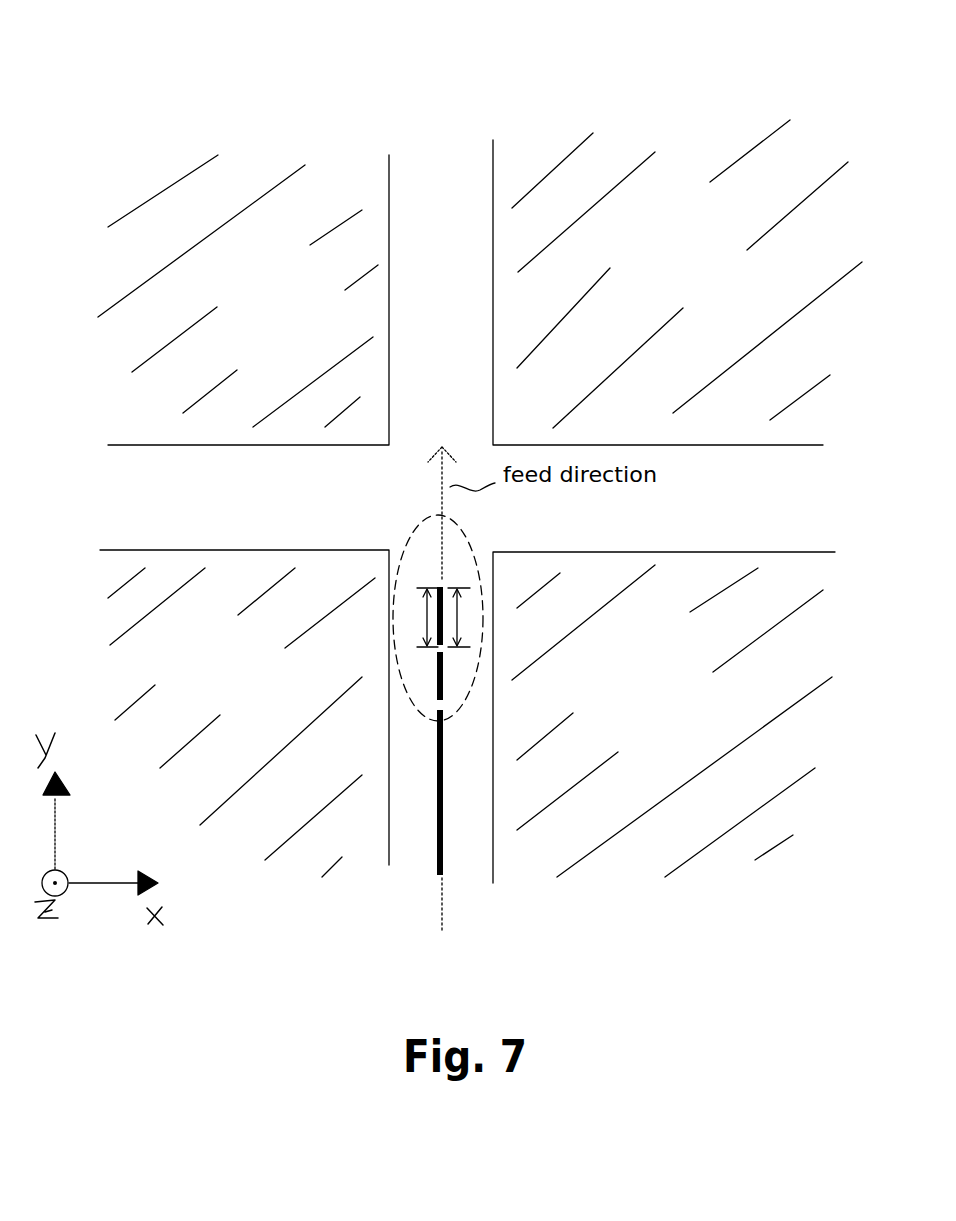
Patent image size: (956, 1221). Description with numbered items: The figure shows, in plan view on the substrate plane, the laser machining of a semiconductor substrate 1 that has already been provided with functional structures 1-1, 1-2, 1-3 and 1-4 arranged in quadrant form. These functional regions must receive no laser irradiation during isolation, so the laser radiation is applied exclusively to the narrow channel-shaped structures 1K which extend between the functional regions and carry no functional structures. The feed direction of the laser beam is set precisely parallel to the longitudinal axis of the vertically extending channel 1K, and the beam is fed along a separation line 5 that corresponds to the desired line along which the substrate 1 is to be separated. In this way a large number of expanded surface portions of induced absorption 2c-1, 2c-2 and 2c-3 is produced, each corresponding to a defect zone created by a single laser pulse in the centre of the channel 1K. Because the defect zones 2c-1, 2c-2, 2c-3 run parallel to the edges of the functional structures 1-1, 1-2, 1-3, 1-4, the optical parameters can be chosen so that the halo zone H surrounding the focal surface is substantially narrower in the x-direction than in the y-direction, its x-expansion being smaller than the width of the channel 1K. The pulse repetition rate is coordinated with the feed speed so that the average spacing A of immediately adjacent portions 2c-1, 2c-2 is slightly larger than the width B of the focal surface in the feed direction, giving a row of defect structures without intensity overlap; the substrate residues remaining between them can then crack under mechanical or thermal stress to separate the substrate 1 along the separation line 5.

The semiconductor substrate 1 is at (713, 153).
The functional structure 1-1 is at (316, 342).
The functional structure 1-2 is at (713, 268).
The functional structure 1-3 is at (663, 705).
The functional structure 1-4 is at (255, 697).
The channel 1K is at (458, 303).
The halo zone H is at (410, 530).
The average spacing A is at (421, 617).
The width of the laser beam focal surface B is at (462, 617).
The expanded surface portion of induced absorption 2c-1 is at (445, 858).
The expanded surface portion of induced absorption 2c-2 is at (437, 800).
The expanded surface portion of induced absorption 2c-3 is at (445, 745).
The separation line 5 is at (430, 908).